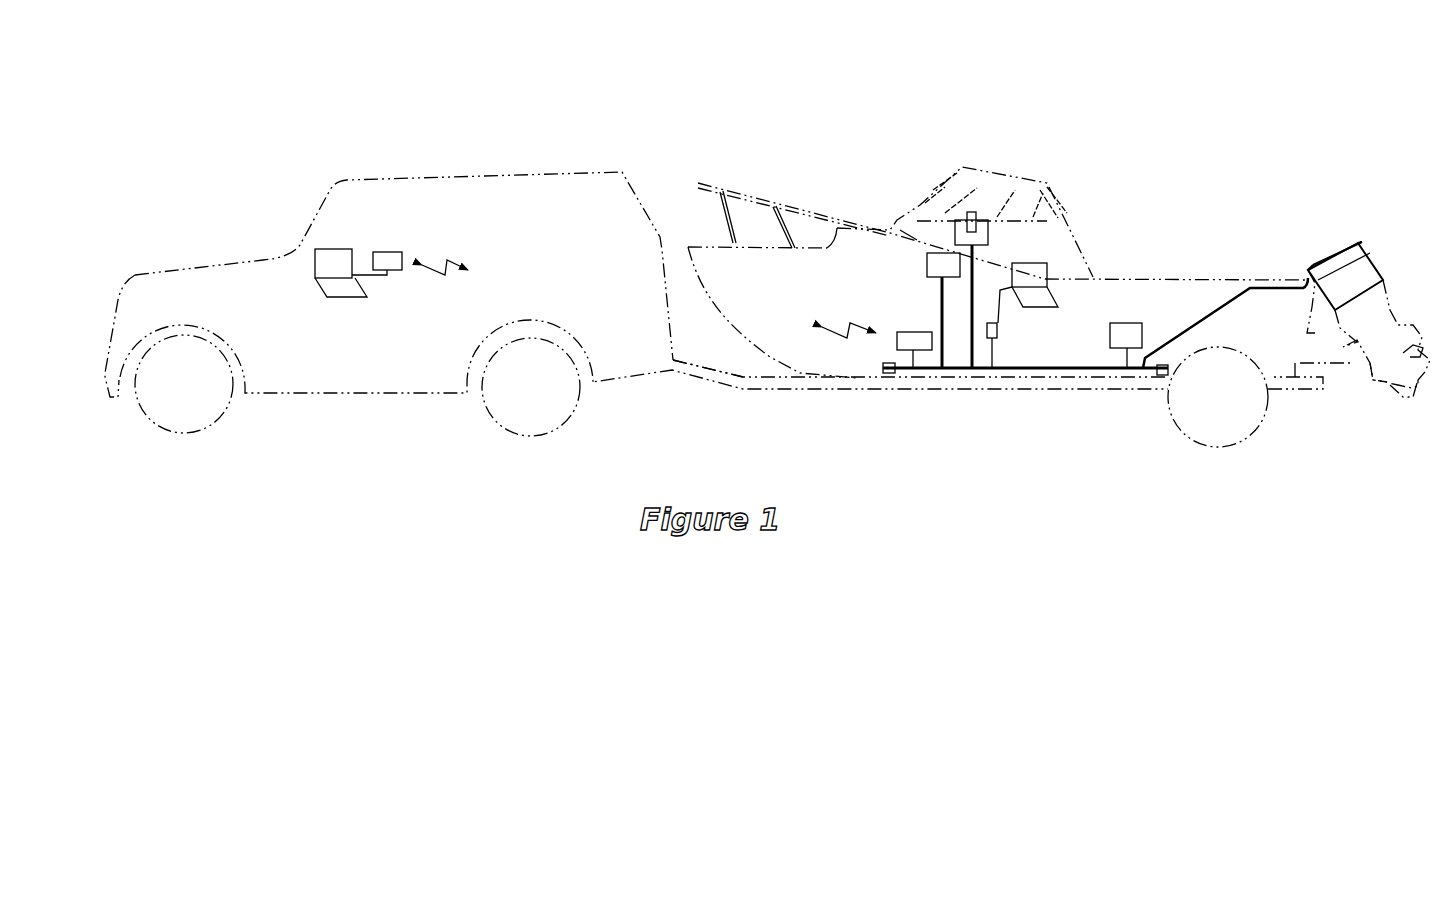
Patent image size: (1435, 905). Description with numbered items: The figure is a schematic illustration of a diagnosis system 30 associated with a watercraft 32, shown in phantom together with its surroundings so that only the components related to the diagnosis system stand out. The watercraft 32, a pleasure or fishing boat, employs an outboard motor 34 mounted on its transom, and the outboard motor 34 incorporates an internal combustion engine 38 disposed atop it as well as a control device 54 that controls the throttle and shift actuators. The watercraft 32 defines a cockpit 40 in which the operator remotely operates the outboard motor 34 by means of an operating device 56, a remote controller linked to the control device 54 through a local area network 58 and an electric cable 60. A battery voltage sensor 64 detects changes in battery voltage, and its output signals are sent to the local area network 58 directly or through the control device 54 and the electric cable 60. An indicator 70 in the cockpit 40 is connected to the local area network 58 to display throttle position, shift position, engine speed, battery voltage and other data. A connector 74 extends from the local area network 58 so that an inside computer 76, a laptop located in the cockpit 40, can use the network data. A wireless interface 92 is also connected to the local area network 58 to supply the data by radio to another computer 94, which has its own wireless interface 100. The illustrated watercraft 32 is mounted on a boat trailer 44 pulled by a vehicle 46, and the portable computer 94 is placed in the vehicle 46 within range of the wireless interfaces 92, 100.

The diagnosis system 30 is at (1100, 418).
The watercraft 32 is at (804, 258).
The outboard motor 34 is at (1387, 350).
The internal combustion engine 38 is at (1367, 272).
The cockpit 40 is at (1023, 237).
The boat trailer 44 is at (758, 382).
The vehicle 46 is at (463, 172).
The control device 54 is at (1340, 263).
The operating device 56 is at (982, 230).
The local area network 58 is at (1027, 370).
The electric cable 60 is at (1212, 313).
The battery voltage sensor 64 is at (1125, 330).
The indicator 70 is at (938, 263).
The connector 74 is at (988, 332).
The computer 76 is at (1047, 267).
The wireless interface 92 is at (897, 341).
The computer 94 is at (332, 250).
The wireless interface 100 is at (387, 253).